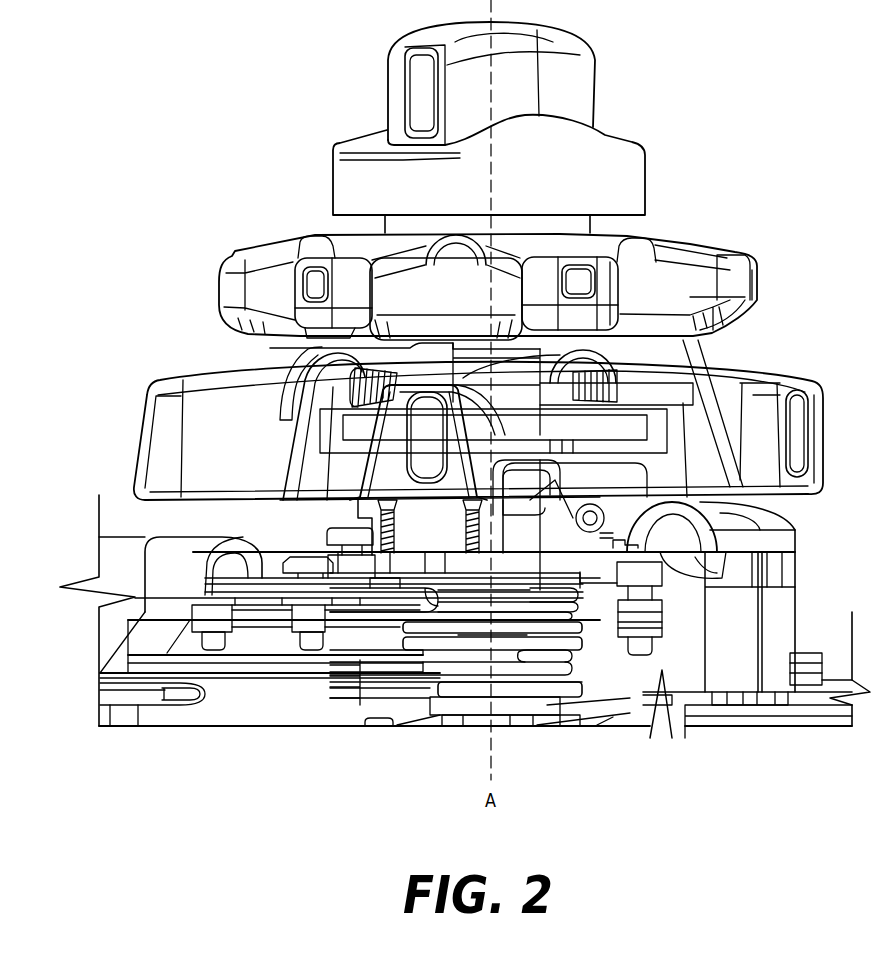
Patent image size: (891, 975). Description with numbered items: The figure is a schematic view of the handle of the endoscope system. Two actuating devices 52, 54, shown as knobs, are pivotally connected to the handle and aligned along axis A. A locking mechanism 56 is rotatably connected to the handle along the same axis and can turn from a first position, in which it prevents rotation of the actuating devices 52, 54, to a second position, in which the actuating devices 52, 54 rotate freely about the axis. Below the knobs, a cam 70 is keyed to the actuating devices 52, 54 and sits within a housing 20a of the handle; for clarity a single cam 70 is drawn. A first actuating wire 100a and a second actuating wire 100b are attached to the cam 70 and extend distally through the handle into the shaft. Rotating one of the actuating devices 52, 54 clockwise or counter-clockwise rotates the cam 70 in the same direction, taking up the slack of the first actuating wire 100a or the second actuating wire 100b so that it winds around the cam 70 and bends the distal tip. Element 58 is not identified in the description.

The locking mechanism 56 is at (580, 73).
The actuating device 52 is at (700, 250).
The actuating device 54 is at (798, 405).
The housing 20a is at (122, 543).
The first actuating wire 100a is at (240, 660).
The second actuating wire 100b is at (288, 678).
The cam 70 is at (550, 707).
The housing block 58 is at (748, 677).